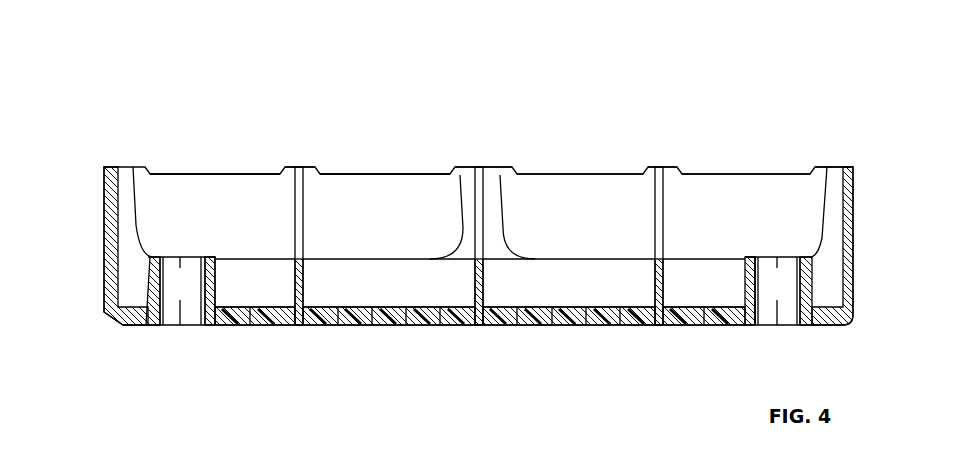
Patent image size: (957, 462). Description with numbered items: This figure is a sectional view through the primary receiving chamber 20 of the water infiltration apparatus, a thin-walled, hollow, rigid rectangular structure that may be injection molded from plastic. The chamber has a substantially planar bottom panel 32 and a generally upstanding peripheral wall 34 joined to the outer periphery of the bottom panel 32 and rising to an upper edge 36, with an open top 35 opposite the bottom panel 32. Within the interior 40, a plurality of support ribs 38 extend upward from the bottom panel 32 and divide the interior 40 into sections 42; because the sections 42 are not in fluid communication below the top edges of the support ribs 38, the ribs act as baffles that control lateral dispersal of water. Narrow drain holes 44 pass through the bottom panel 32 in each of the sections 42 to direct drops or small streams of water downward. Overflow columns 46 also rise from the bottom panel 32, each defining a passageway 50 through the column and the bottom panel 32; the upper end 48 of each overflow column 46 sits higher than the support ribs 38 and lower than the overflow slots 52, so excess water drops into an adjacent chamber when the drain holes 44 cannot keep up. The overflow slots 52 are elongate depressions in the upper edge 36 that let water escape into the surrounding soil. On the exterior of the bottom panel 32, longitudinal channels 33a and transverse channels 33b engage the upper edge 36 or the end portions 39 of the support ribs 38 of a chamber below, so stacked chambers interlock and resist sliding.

The primary receiving chamber 20 is at (135, 116).
The bottom panel 32 is at (221, 326).
The longitudinal channels 33a is at (142, 326).
The transverse channels 33b is at (480, 326).
The peripheral wall 34 is at (106, 188).
The open top 35 is at (190, 172).
The upper edge 36 is at (457, 170).
The support ribs 38 is at (128, 172).
The end portions 39 is at (145, 168).
The interior 40 is at (343, 171).
The sections 42 is at (243, 292).
The drain holes 44 is at (250, 326).
The overflow columns 46 is at (214, 279).
The upper end 48 is at (181, 266).
The passageway 50 is at (170, 301).
The overflow slots 52 is at (223, 173).